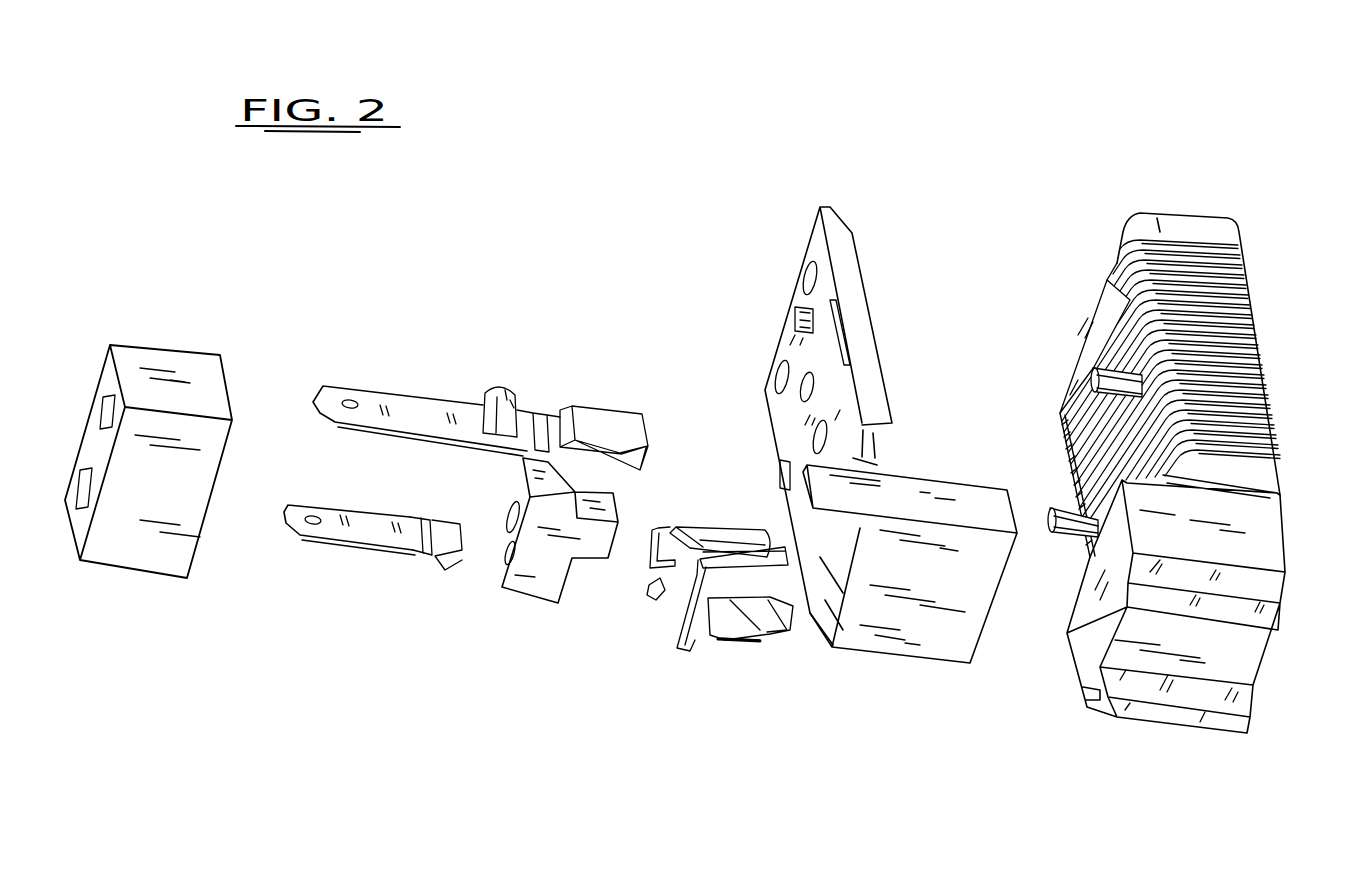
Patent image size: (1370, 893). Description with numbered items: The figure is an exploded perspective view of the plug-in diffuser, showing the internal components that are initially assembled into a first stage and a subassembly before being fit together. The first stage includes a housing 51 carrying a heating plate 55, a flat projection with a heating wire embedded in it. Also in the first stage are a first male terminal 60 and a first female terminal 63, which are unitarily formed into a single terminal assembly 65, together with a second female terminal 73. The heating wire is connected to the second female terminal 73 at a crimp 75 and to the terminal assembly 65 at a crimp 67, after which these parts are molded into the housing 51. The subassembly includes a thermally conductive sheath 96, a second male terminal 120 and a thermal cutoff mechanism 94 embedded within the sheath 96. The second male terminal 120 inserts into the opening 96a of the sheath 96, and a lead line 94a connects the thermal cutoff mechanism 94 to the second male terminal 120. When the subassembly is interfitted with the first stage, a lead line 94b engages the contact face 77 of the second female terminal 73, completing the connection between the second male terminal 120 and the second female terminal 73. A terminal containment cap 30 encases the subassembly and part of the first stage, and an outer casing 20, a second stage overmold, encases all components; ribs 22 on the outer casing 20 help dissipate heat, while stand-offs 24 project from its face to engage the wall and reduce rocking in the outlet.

The outer casing 20 is at (1161, 724).
The ribs 22 is at (1258, 347).
The stand-offs 24 is at (1050, 512).
The terminal containment cap 30 is at (138, 367).
The housing 51 is at (918, 628).
The heating plate 55 is at (825, 372).
The first male terminal 60 is at (318, 387).
The first female terminal 63 is at (590, 413).
The terminal assembly 65 is at (435, 393).
The crimp 67 is at (500, 387).
The second female terminal 73 is at (720, 638).
The crimp 75 is at (655, 592).
The contact face 77 is at (680, 647).
The thermal cutoff mechanism 94 is at (710, 533).
The lead line 94a is at (652, 542).
The lead line 94b is at (752, 632).
The thermally conductive sheath 96 is at (527, 580).
The opening 96a is at (503, 553).
The second male terminal 120 is at (300, 537).